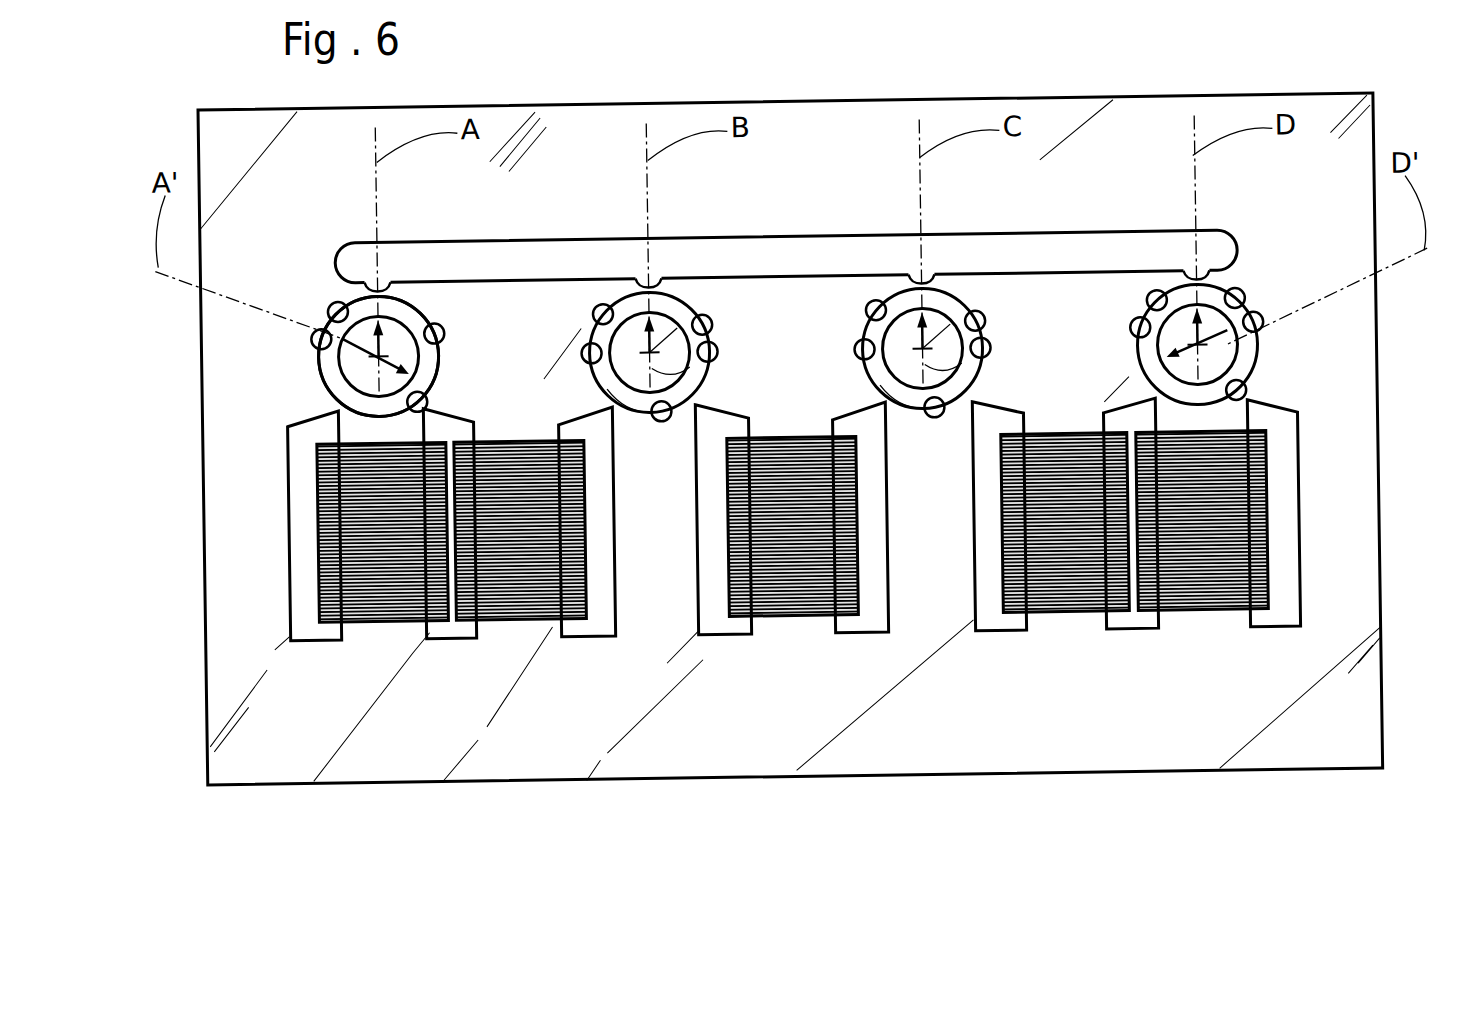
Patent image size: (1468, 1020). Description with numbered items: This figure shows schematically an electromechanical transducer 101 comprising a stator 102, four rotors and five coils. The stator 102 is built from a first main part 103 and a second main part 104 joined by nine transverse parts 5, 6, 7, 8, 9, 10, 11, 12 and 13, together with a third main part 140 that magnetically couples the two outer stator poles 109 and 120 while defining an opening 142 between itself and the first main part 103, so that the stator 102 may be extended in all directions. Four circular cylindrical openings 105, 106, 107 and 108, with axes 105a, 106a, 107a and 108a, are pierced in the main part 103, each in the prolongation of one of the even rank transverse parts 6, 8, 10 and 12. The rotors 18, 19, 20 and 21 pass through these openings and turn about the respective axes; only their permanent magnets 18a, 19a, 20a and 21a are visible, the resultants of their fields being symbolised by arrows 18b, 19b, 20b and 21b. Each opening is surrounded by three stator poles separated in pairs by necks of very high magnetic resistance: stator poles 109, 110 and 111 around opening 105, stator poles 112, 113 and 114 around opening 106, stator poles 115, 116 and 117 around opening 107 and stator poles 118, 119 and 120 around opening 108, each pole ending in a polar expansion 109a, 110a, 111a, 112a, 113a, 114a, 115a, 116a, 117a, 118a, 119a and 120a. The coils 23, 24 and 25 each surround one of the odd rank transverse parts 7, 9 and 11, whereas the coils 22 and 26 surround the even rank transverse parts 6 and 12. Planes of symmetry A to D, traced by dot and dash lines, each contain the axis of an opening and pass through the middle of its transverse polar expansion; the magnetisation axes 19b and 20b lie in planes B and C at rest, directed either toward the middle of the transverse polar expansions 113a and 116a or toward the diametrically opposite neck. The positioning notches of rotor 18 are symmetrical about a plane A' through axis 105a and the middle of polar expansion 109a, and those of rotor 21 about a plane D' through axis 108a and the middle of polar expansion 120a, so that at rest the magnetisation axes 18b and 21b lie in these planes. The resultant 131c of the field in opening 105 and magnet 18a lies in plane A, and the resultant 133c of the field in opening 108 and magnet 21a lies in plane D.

The transverse part 5 is at (238, 579).
The even rank transverse part 6 is at (386, 586).
The odd rank transverse part 7 is at (539, 560).
The even rank transverse part 8 is at (645, 597).
The odd rank transverse part 9 is at (796, 632).
The even rank transverse part 10 is at (921, 596).
The odd rank transverse part 11 is at (1073, 590).
The even rank transverse part 12 is at (1213, 592).
The transverse part 13 is at (1338, 585).
The rotor 18 is at (361, 272).
The permanent magnet 18a is at (355, 330).
The magnetisation axis 18b is at (310, 340).
The rotor 19 is at (688, 267).
The permanent magnet 19a is at (705, 330).
The magnetisation axis 19b is at (688, 375).
The rotor 20 is at (959, 264).
The permanent magnet 20a is at (978, 330).
The magnetisation axis 20b is at (958, 384).
The rotor 21 is at (1186, 260).
The permanent magnet 21a is at (1167, 314).
The magnetisation axis 21b is at (1240, 308).
The coil 22 is at (356, 599).
The coil 23 is at (495, 597).
The coil 24 is at (770, 598).
The coil 25 is at (1046, 585).
The coil 26 is at (1188, 591).
The electromechanical transducer 101 is at (1296, 266).
The stator 102 is at (1332, 338).
The first main part 103 is at (803, 289).
The main part 104 is at (866, 743).
The opening 105 is at (411, 246).
The axis 105a is at (437, 322).
The opening 106 is at (678, 287).
The axis 106a is at (600, 303).
The opening 107 is at (938, 291).
The axis 107a is at (892, 310).
The opening 108 is at (1233, 285).
The axis 108a is at (1127, 314).
The stator pole 109 is at (293, 377).
The polar expansion 109a is at (327, 312).
The stator pole 110 is at (333, 415).
The polar expansion 110a is at (422, 403).
The stator pole 111 is at (475, 378).
The polar expansion 111a is at (441, 335).
The stator pole 112 is at (565, 374).
The polar expansion 112a is at (592, 328).
The stator pole 113 is at (664, 453).
The transverse polar expansion 113a is at (664, 428).
The stator pole 114 is at (760, 374).
The polar expansion 114a is at (708, 332).
The stator pole 115 is at (837, 375).
The polar expansion 115a is at (862, 350).
The stator pole 116 is at (942, 457).
The transverse polar expansion 116a is at (936, 428).
The stator pole 117 is at (1033, 378).
The polar expansion 117a is at (982, 331).
The stator pole 118 is at (1126, 377).
The polar expansion 118a is at (1130, 338).
The stator pole 119 is at (1249, 405).
The polar expansion 119a is at (1316, 388).
The stator pole 120 is at (1308, 378).
The polar expansion 120a is at (1342, 313).
The field resultant 131c is at (389, 293).
The field resultant 133c is at (1156, 384).
The third main part 140 is at (827, 159).
The opening 142 is at (600, 262).